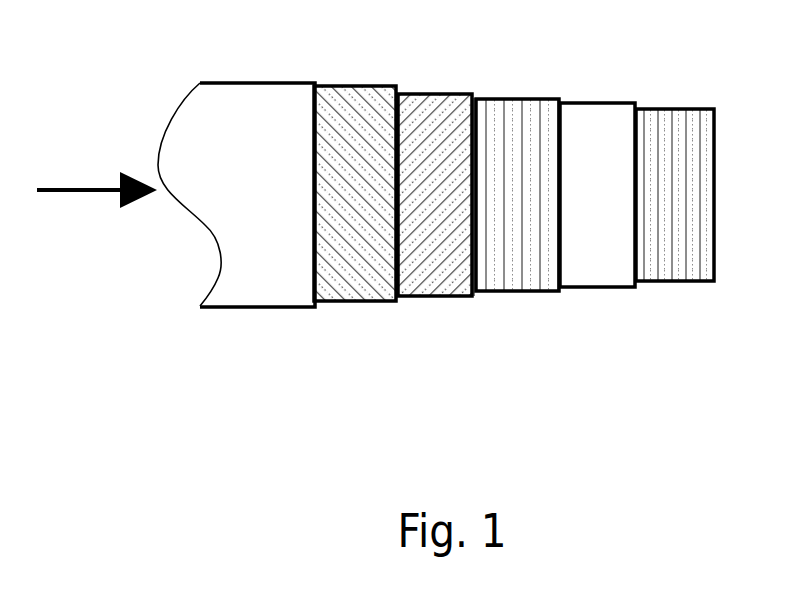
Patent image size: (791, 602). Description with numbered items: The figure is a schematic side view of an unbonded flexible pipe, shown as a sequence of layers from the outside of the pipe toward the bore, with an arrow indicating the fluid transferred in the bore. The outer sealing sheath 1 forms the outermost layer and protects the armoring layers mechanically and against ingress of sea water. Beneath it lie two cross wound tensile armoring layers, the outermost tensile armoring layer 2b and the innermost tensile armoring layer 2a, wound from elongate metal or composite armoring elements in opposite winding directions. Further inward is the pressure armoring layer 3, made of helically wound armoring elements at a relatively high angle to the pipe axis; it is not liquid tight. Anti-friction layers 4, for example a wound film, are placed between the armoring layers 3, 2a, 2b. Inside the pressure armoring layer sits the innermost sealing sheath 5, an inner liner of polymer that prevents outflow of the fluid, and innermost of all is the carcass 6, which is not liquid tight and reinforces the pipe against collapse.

The outer sealing sheath 1 is at (243, 106).
The innermost tensile armoring layer 2a is at (436, 120).
The outermost tensile armoring layer 2b is at (354, 116).
The pressure armoring layer 3 is at (520, 278).
The anti-friction layers 4 is at (399, 306).
The innermost sealing sheath 5 is at (599, 278).
The carcass 6 is at (688, 288).